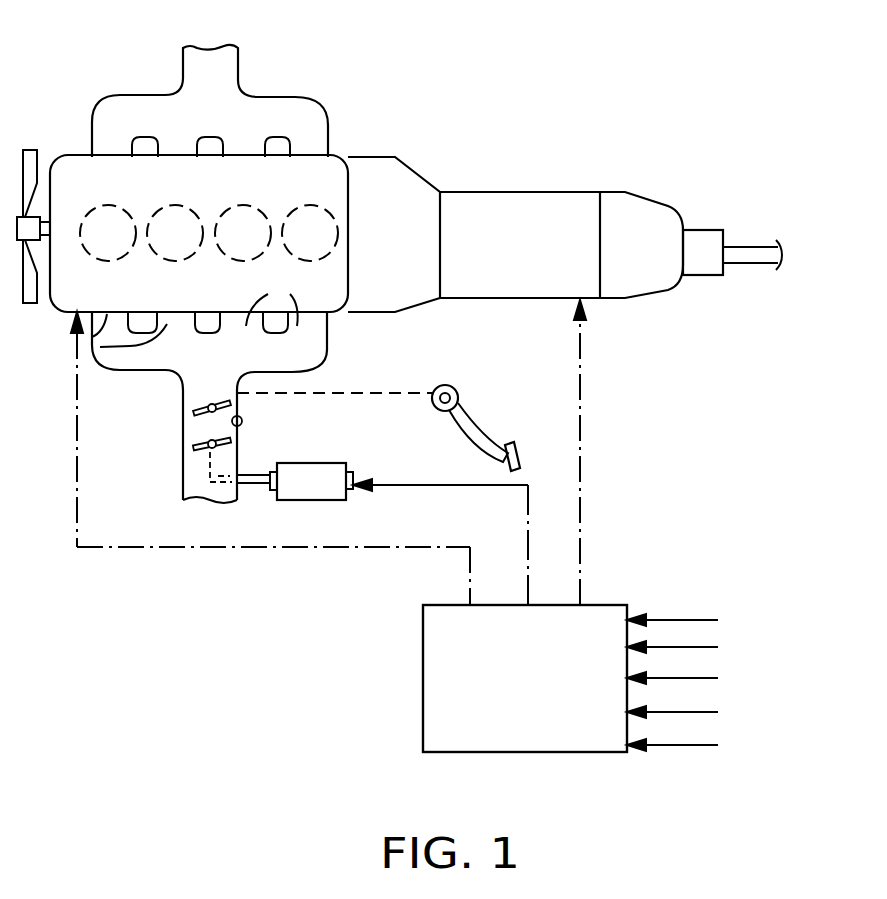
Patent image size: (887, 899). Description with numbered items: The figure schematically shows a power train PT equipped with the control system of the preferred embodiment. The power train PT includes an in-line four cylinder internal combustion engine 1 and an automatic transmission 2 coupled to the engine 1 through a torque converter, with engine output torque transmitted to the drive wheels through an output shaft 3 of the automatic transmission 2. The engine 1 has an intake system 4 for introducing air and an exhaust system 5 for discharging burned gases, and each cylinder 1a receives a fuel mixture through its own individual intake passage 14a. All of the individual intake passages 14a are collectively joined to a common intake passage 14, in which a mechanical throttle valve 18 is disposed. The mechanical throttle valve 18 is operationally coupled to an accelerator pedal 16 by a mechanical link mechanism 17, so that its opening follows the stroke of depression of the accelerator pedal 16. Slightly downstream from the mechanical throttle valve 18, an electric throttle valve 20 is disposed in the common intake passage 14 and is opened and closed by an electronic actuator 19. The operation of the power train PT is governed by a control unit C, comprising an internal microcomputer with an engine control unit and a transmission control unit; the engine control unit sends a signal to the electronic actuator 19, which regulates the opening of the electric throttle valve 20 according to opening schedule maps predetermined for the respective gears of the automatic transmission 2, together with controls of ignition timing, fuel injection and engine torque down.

The internal combustion engine 1 is at (355, 145).
The cylinder 1a is at (158, 211).
The automatic transmission 2 is at (572, 178).
The output shaft 3 is at (757, 257).
The intake system 4 is at (143, 385).
The exhaust system 5 is at (263, 87).
The common intake passage 14 is at (110, 347).
The individual intake passage 14a is at (273, 297).
The accelerator pedal 16 is at (512, 443).
The mechanical link mechanism 17 is at (332, 393).
The mechanical throttle valve 18 is at (196, 413).
The electronic actuator 19 is at (310, 463).
The electric throttle valve 20 is at (196, 450).
The power train PT is at (490, 118).
The control unit C is at (480, 752).